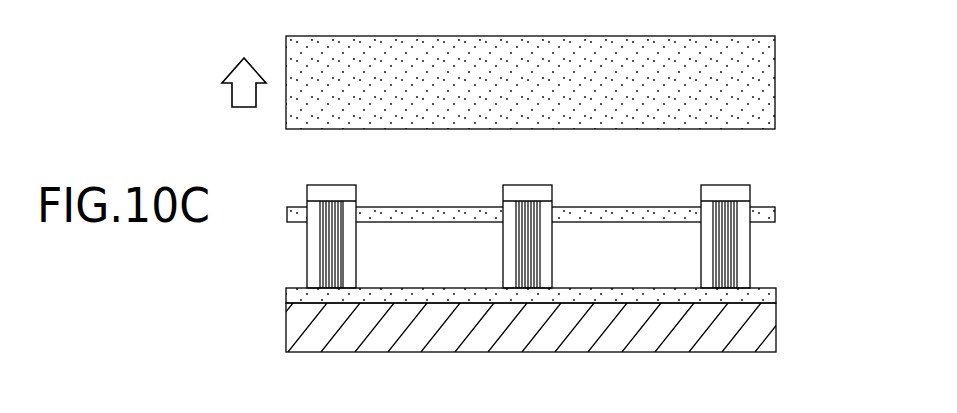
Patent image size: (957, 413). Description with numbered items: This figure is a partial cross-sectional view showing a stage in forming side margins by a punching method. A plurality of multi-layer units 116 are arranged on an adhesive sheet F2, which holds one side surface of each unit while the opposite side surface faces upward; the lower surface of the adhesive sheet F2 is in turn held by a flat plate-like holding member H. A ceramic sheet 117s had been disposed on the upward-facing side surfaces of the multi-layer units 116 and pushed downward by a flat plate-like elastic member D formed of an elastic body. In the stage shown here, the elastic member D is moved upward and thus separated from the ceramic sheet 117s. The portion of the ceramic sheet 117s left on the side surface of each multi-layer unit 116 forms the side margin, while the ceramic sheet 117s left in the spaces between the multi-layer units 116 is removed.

The elastic member D is at (757, 85).
The multi-layer unit 116 is at (554, 245).
The ceramic sheet 117s is at (758, 208).
The adhesive sheet F2 is at (768, 292).
The holding member H is at (757, 333).